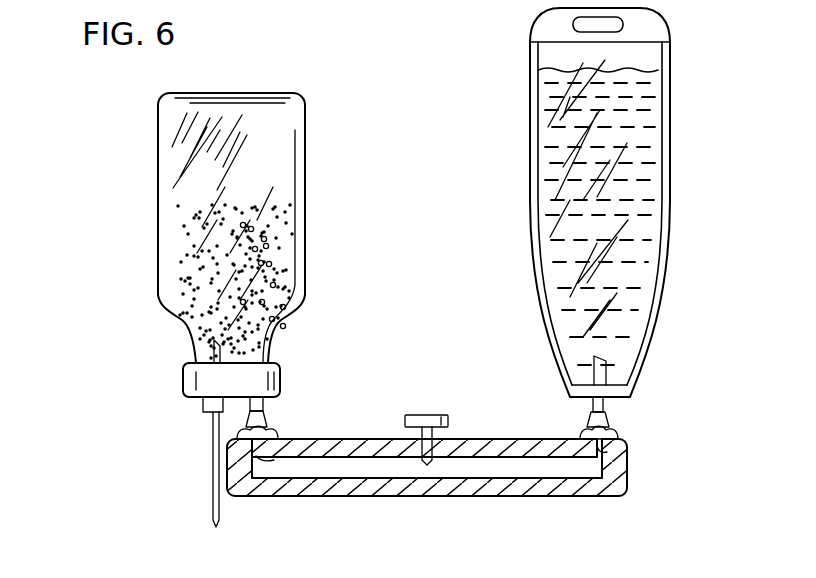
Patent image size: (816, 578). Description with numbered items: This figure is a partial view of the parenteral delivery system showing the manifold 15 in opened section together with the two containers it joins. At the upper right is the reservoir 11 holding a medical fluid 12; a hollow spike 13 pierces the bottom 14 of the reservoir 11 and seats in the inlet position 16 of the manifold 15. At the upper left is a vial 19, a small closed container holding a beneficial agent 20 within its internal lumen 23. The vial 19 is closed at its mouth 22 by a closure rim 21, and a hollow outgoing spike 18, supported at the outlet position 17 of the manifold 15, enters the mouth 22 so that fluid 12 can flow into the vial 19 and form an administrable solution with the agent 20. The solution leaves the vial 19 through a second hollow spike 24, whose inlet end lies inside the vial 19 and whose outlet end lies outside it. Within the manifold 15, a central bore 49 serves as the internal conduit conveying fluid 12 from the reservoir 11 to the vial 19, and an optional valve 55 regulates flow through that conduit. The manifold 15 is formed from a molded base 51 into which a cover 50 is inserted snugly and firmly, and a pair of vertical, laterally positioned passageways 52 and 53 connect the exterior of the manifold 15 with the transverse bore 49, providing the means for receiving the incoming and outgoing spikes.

The reservoir 11 is at (665, 150).
The medical fluid 12 is at (635, 195).
The spike 13 is at (610, 360).
The bottom 14 is at (620, 393).
The manifold 15 is at (627, 478).
The inlet position 16 is at (615, 438).
The outlet position 17 is at (280, 432).
The spike 18 is at (265, 405).
The vial 19 is at (306, 247).
The agent 20 is at (282, 232).
The closure rim 21 is at (183, 378).
The mouth 22 is at (203, 403).
The internal lumen 23 is at (290, 152).
The spike 24 is at (218, 345).
The central bore 49 is at (535, 470).
The cover 50 is at (512, 438).
The base 51 is at (425, 497).
The lateral passageway 52 is at (600, 452).
The lateral passageway 53 is at (283, 440).
The valve 55 is at (438, 415).